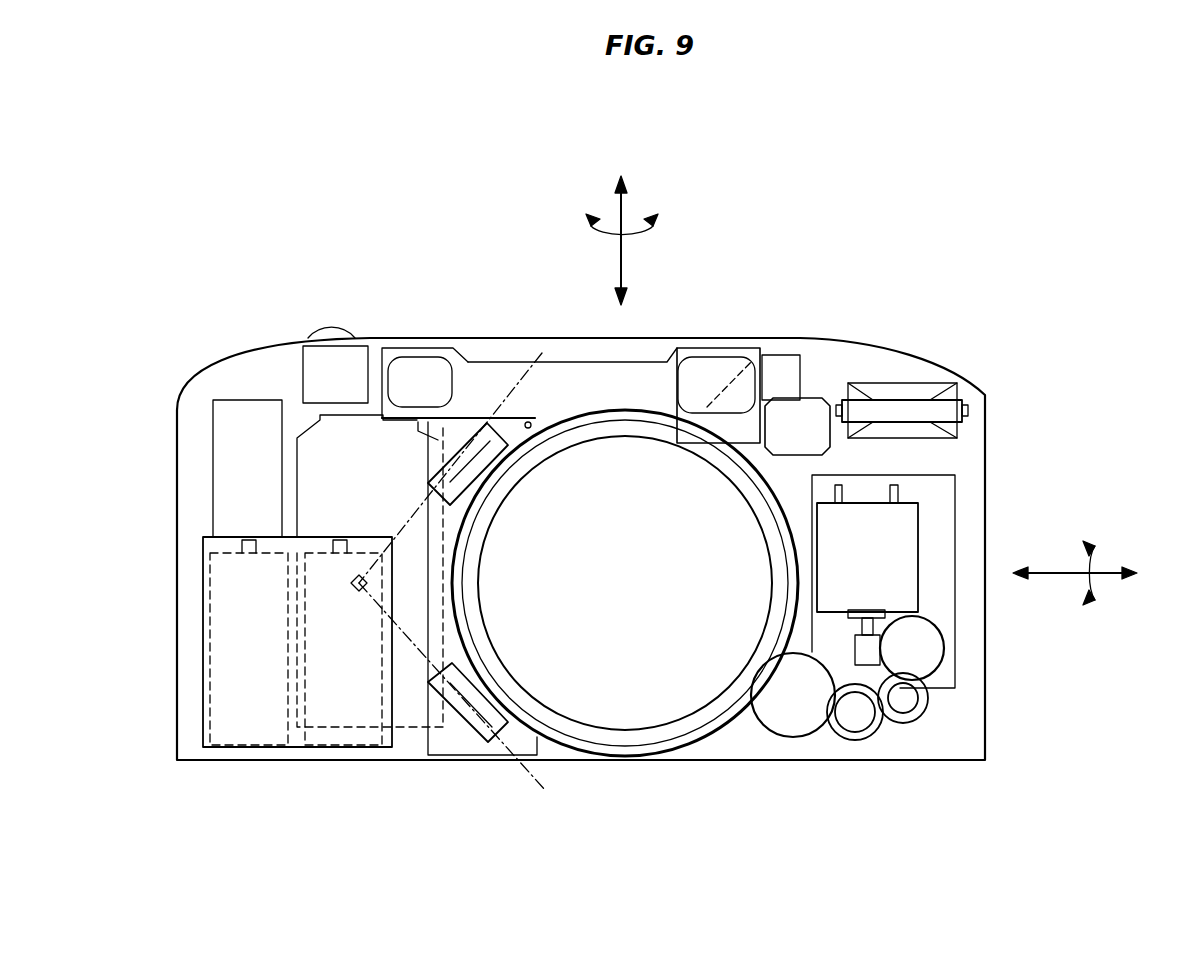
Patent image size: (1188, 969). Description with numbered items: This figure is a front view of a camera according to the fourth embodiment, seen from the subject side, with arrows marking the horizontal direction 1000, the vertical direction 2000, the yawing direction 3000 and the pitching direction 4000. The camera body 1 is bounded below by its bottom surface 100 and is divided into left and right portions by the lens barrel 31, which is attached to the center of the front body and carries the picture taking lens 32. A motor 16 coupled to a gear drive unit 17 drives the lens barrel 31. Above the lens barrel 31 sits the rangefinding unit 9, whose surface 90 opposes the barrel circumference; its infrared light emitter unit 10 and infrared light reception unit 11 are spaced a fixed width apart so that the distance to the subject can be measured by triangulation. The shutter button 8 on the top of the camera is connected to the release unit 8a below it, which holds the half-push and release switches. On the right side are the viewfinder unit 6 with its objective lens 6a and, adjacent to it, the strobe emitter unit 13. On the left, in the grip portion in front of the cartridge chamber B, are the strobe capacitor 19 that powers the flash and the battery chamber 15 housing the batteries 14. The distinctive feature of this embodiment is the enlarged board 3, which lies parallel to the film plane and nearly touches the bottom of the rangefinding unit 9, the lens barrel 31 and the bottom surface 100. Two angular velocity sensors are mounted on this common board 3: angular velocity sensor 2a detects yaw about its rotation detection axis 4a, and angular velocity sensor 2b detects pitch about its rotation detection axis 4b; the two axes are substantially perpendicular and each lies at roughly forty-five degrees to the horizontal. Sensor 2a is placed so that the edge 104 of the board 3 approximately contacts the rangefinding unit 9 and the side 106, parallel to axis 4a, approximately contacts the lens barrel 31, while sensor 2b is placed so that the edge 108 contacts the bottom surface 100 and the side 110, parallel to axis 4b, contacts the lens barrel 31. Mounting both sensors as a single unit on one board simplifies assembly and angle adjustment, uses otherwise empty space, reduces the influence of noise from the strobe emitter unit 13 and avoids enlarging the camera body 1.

The camera body 1 is at (643, 337).
The bottom surface 100 is at (215, 765).
The angular velocity sensor 2a is at (522, 407).
The angular velocity sensor 2b is at (458, 723).
The board 3 is at (428, 752).
The rotation detection axis 4a is at (542, 353).
The rotation detection axis 4b is at (542, 773).
The viewfinder unit 6 is at (783, 370).
The objective lens 6a is at (810, 417).
The shutter button 8 is at (332, 340).
The release unit 8a is at (317, 375).
The rangefinding unit 9 is at (465, 378).
The infrared light emitter unit 10 is at (713, 367).
The infrared light reception unit 11 is at (420, 370).
The strobe emitter unit 13 is at (950, 408).
The batteries 14 is at (243, 730).
The battery chamber 15 is at (205, 547).
The motor 16 is at (907, 527).
The gear drive unit 17 is at (867, 727).
The strobe capacitor 19 is at (228, 440).
The lens barrel 31 is at (707, 730).
The picture taking lens 32 is at (622, 715).
The surface 90 is at (445, 418).
The edge 104 is at (532, 423).
The side 106 is at (487, 472).
The edge 108 is at (480, 755).
The side 110 is at (497, 693).
The horizontal direction 1000 is at (1113, 572).
The vertical direction 2000 is at (612, 202).
The yawing direction 3000 is at (650, 223).
The pitching direction 4000 is at (1078, 593).
The cartridge chamber B is at (320, 442).